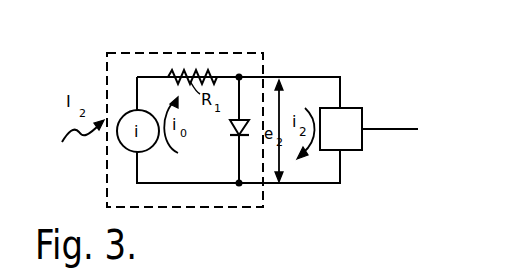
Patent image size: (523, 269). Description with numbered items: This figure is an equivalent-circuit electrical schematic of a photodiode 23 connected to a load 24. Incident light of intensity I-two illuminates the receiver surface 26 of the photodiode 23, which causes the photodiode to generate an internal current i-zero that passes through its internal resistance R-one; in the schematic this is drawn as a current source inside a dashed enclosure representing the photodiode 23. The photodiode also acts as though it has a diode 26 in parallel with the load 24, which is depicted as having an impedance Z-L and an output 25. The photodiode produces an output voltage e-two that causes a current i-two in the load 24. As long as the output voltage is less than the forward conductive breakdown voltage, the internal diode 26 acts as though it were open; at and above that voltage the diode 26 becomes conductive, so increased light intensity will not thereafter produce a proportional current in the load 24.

The photodiode 23 is at (205, 53).
The load 24 is at (345, 108).
The output 25 is at (385, 129).
The diode 26 is at (233, 130).